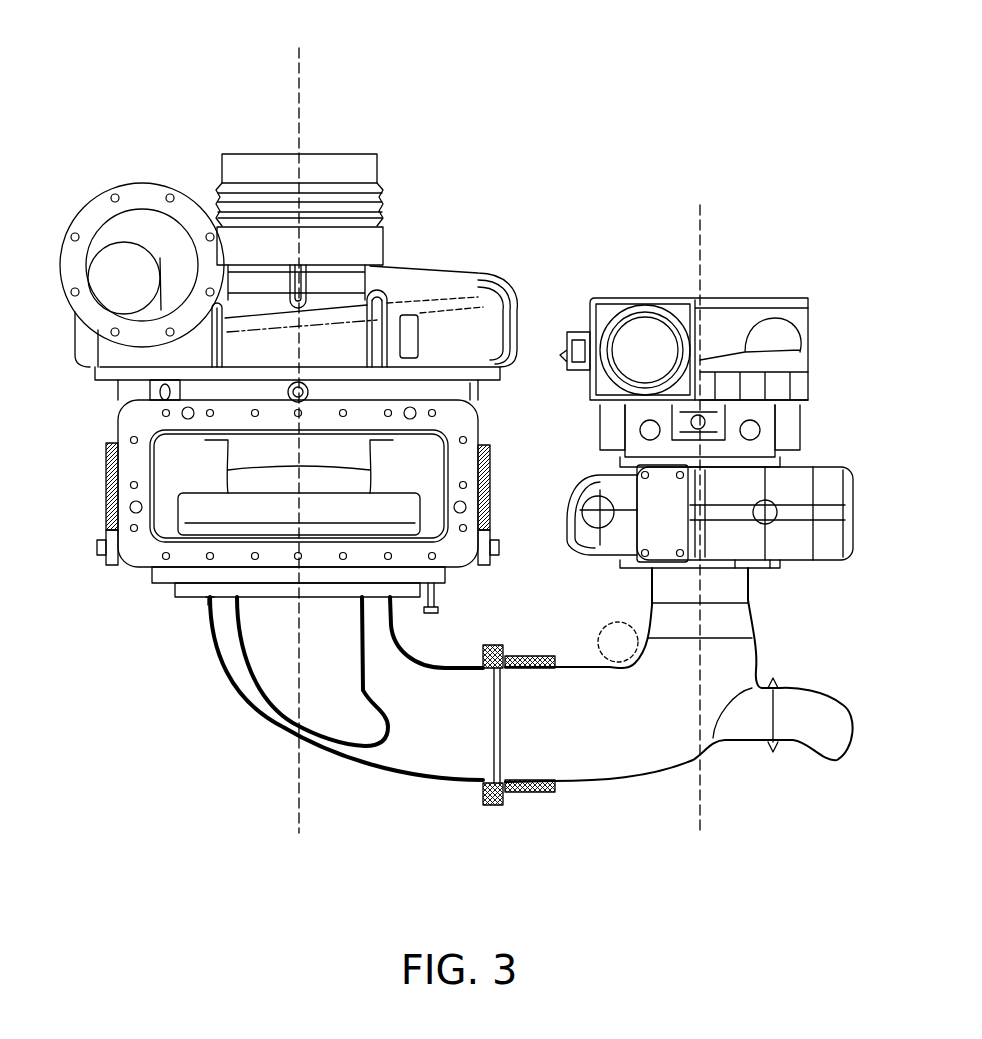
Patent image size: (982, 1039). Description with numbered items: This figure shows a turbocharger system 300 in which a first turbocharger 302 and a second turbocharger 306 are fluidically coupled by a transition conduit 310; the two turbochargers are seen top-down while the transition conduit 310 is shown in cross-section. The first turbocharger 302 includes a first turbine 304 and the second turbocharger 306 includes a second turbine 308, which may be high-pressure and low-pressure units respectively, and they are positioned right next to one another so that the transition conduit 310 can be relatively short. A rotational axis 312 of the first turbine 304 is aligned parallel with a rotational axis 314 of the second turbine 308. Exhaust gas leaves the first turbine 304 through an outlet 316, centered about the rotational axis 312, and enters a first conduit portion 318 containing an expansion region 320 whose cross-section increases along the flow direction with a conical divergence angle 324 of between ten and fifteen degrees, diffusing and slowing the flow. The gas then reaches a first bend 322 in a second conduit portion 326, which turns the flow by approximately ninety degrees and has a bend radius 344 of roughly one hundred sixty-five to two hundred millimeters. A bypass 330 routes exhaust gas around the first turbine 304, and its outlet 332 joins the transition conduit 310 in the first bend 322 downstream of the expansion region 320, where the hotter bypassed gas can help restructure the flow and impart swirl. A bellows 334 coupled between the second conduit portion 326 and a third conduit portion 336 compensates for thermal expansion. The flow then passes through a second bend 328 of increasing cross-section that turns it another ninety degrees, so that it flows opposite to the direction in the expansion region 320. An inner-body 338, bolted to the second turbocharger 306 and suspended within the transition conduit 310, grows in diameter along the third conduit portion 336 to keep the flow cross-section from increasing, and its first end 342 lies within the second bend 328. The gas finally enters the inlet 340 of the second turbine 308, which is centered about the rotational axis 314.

The turbocharger system 300 is at (572, 60).
The first turbocharger 302 is at (795, 292).
The first turbine 304 is at (830, 470).
The second turbocharger 306 is at (226, 146).
The second turbine 308 is at (116, 424).
The transition conduit 310 is at (172, 737).
The rotational axis of the first turbine 312 is at (697, 244).
The rotational axis of the second turbine 314 is at (297, 82).
The outlet of the first turbine 316 is at (745, 570).
The first conduit portion 318 is at (683, 627).
The expansion region 320 is at (755, 620).
The first bend 322 is at (690, 765).
The conical divergence angle 324 is at (758, 637).
The second conduit portion 326 is at (683, 701).
The second bend 328 is at (317, 753).
The bypass 330 is at (802, 752).
The outlet of the bypass 332 is at (770, 683).
The bellows 334 is at (537, 792).
The third conduit portion 336 is at (310, 716).
The inner-body 338 is at (357, 685).
The inlet of the second turbine 340 is at (268, 597).
The first end of the inner-body 342 is at (385, 736).
The bend radius 344 is at (625, 648).